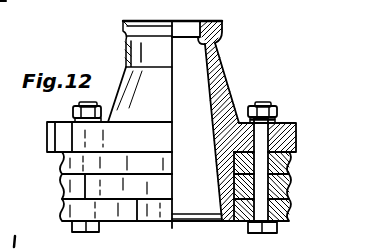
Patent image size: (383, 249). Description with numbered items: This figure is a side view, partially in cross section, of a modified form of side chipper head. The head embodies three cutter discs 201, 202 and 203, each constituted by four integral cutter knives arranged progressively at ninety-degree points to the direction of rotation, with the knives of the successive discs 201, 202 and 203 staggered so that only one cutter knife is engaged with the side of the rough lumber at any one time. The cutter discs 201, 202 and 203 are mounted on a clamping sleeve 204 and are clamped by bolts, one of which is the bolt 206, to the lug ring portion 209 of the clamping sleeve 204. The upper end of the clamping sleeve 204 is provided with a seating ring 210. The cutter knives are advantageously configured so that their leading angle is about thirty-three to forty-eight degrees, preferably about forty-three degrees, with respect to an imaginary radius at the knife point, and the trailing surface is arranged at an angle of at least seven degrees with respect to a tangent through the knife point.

The disc 201 is at (290, 166).
The disc 202 is at (290, 186).
The disc 203 is at (290, 211).
The clamping sleeve 204 is at (224, 90).
The bolt 206 is at (275, 107).
The lug ring portion 209 is at (293, 137).
The seating ring 210 is at (224, 46).